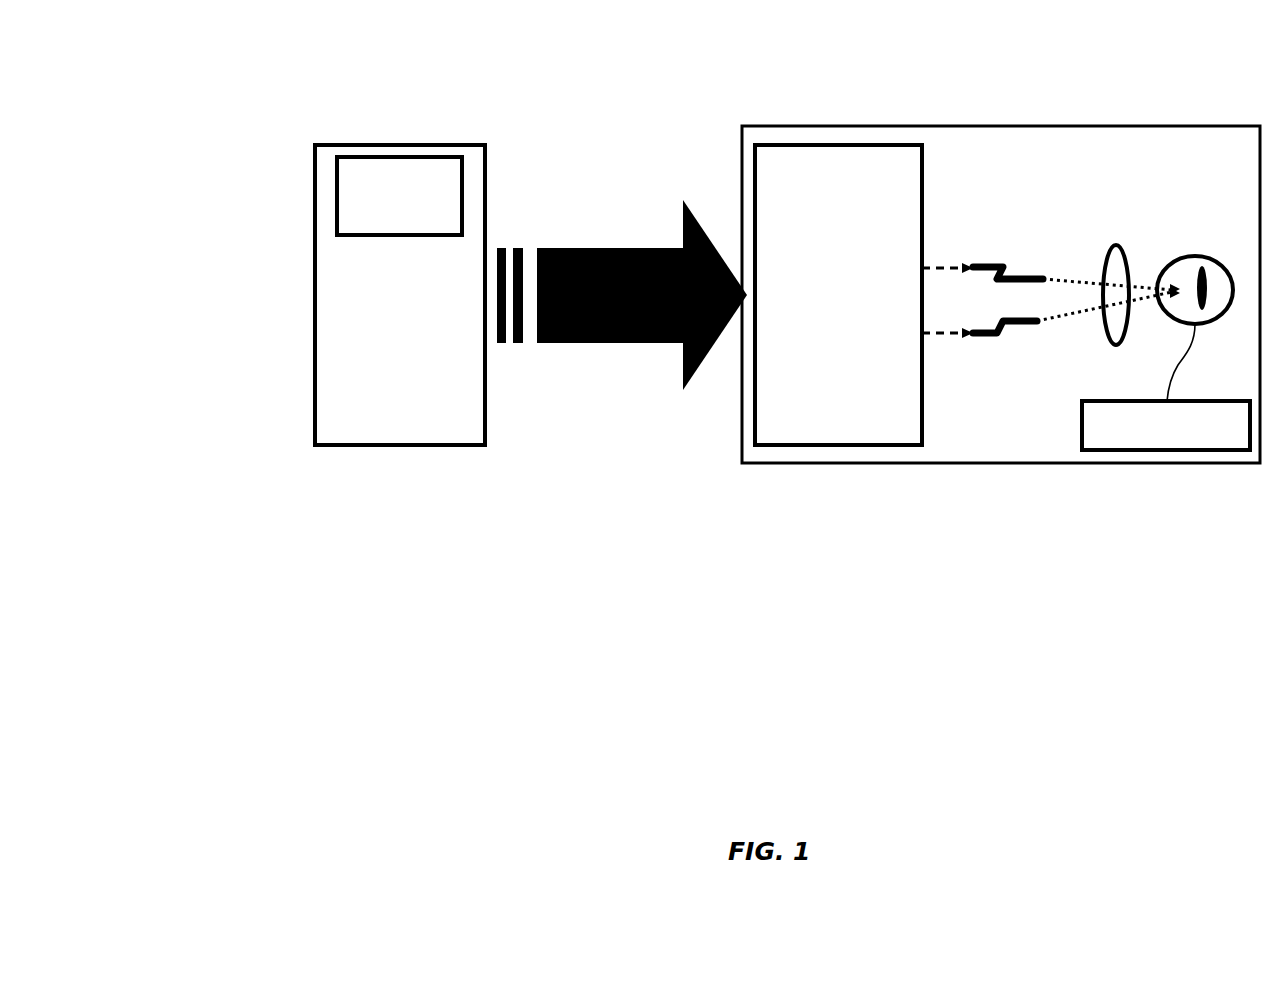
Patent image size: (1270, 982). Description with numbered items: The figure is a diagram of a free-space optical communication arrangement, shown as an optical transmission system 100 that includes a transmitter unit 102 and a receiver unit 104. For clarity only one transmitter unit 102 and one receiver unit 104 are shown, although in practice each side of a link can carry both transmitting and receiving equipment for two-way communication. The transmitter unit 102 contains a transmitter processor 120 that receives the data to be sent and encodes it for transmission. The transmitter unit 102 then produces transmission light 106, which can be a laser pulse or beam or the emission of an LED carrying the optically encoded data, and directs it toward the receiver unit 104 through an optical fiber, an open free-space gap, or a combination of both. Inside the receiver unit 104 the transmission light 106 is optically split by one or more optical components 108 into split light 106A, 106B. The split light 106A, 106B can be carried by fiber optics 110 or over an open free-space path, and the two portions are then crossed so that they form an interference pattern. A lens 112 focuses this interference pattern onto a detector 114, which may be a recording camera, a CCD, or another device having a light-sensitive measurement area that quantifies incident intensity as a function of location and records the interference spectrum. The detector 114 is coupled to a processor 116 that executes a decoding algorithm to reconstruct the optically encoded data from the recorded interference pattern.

The optical transmission system 100 is at (301, 78).
The transmitter unit 102 is at (446, 441).
The receiver unit 104 is at (1199, 132).
The transmission light 106 is at (617, 235).
The split light 106A is at (947, 350).
The split light 106B is at (949, 255).
The optical components 108 is at (801, 151).
The fiber optics 110 is at (1040, 306).
The lens 112 is at (1124, 254).
The detector 114 is at (1214, 247).
The processor 116 is at (1179, 449).
The transmitter processor 120 is at (435, 164).